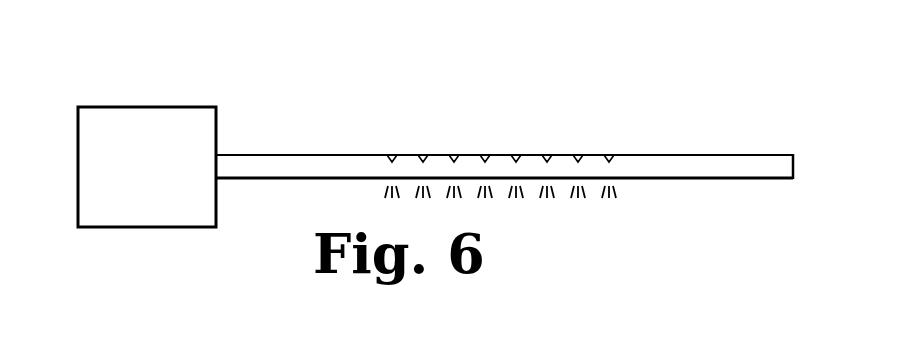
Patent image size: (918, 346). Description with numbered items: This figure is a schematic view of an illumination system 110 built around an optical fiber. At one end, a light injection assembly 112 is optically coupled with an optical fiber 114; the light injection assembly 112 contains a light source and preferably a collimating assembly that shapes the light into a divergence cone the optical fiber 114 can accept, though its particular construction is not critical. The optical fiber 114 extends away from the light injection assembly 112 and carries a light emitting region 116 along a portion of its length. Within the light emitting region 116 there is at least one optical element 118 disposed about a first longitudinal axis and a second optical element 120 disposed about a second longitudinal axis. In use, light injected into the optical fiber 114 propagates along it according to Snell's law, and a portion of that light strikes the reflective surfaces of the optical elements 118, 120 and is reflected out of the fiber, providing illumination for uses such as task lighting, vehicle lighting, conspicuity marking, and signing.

The illumination system 110 is at (350, 143).
The light injection assembly 112 is at (182, 123).
The optical fiber 114 is at (268, 165).
The light emitting region 116 is at (617, 137).
The optical element 118 is at (578, 154).
The second optical element 120 is at (611, 153).